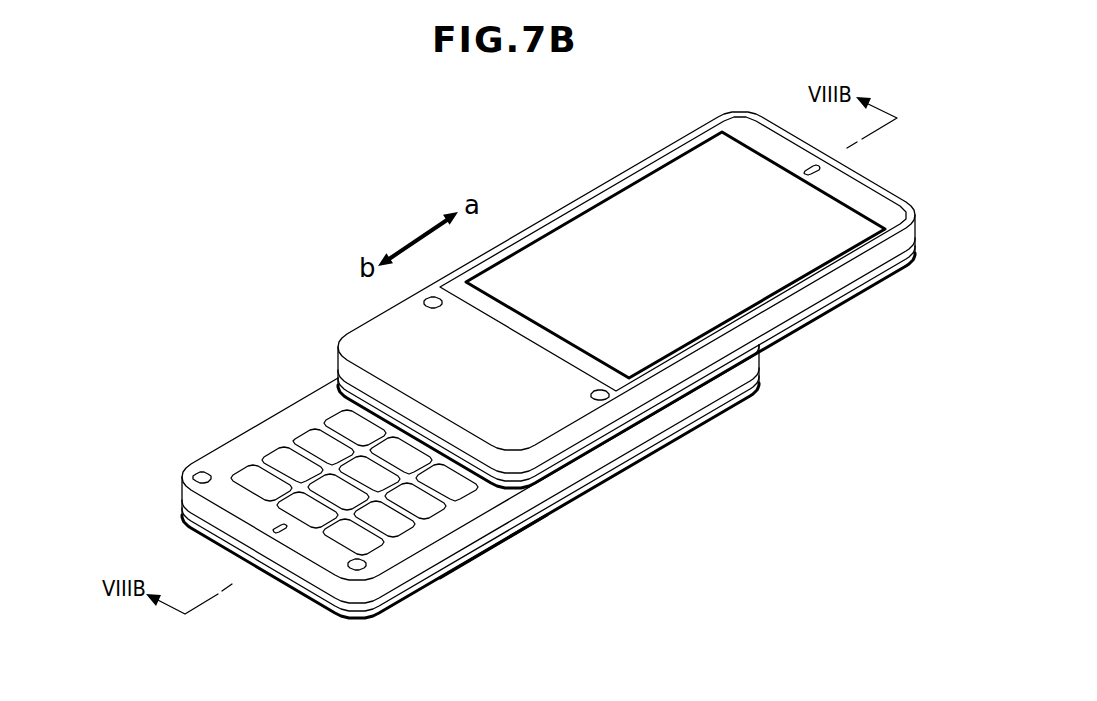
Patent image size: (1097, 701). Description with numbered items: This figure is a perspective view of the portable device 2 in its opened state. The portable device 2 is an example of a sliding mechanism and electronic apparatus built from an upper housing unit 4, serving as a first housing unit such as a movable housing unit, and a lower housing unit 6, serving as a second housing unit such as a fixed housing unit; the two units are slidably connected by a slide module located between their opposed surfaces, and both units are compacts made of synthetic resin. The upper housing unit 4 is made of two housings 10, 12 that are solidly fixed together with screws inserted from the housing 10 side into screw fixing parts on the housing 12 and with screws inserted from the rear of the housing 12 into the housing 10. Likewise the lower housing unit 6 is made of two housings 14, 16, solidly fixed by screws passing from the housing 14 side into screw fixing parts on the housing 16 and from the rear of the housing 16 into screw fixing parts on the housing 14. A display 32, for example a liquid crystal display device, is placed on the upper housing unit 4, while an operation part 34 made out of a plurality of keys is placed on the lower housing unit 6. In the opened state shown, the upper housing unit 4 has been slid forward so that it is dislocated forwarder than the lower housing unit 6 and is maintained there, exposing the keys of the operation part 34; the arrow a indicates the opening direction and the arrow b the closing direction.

The portable device 2 is at (95, 290).
The upper housing unit 4 is at (123, 263).
The lower housing unit 6 is at (123, 425).
The housing 10 is at (336, 346).
The housing 12 is at (337, 380).
The housing 14 is at (182, 485).
The housing 16 is at (197, 537).
The display 32 is at (641, 192).
The operation part 34 is at (548, 536).